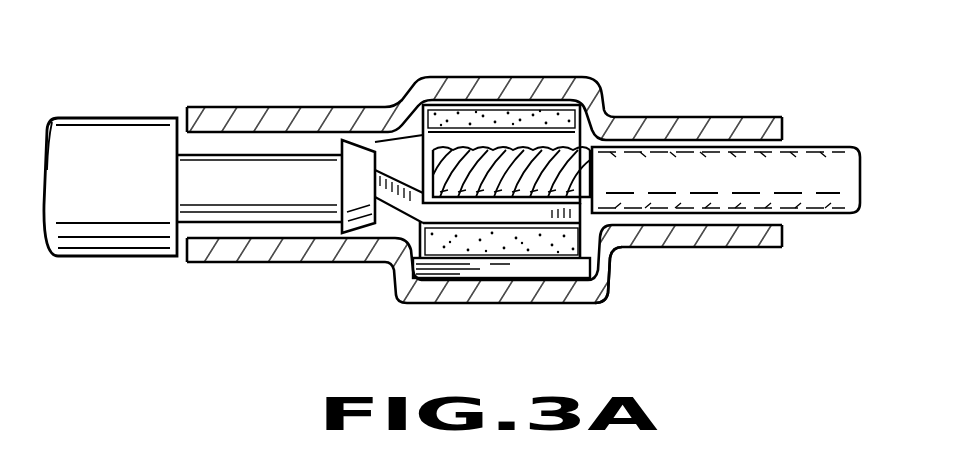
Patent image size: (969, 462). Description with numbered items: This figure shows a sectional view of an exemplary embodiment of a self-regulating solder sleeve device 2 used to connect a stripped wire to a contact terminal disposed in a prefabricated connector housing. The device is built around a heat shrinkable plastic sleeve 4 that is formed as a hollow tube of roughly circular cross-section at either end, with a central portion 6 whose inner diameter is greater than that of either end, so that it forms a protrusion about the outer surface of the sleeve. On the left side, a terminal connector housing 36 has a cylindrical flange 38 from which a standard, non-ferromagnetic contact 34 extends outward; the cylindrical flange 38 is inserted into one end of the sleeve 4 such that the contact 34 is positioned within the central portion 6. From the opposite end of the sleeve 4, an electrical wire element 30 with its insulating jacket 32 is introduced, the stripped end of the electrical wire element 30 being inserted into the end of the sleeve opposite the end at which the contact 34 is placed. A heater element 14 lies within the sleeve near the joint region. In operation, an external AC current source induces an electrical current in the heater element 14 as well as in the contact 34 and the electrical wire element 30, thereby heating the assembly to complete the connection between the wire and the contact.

The solder sleeve device 2 is at (771, 116).
The heat shrinkable plastic sleeve 4 is at (617, 285).
The central portion 6 is at (588, 77).
The heater element 14 is at (557, 273).
The electrical wire element 30 is at (470, 153).
The insulating jacket 32 is at (833, 213).
The contact 34 is at (397, 237).
The terminal connector housing 36 is at (110, 256).
The cylindrical flange 38 is at (252, 217).